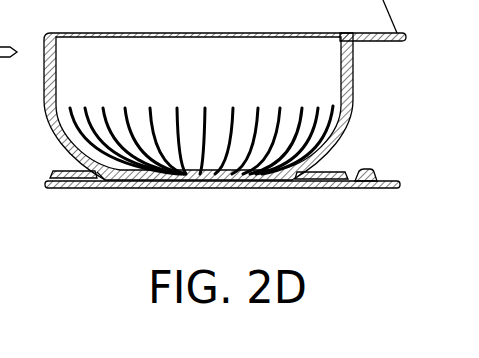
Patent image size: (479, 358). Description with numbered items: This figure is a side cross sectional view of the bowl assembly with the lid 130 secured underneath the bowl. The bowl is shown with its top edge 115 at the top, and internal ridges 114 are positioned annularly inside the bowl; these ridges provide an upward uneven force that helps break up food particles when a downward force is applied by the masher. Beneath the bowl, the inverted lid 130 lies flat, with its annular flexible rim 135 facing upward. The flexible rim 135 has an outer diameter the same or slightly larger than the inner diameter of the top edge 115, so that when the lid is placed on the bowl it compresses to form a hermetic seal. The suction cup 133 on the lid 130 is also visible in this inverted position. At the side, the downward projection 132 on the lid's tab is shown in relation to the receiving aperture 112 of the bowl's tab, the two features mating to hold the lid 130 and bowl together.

The projection receiver 112 is at (365, 38).
The internal ridges 114 is at (150, 112).
The top edge 115 is at (57, 36).
The lid 130 is at (292, 181).
The downward projection 132 is at (365, 172).
The suction cup 133 is at (93, 172).
The annular flexible rim 135 is at (67, 170).